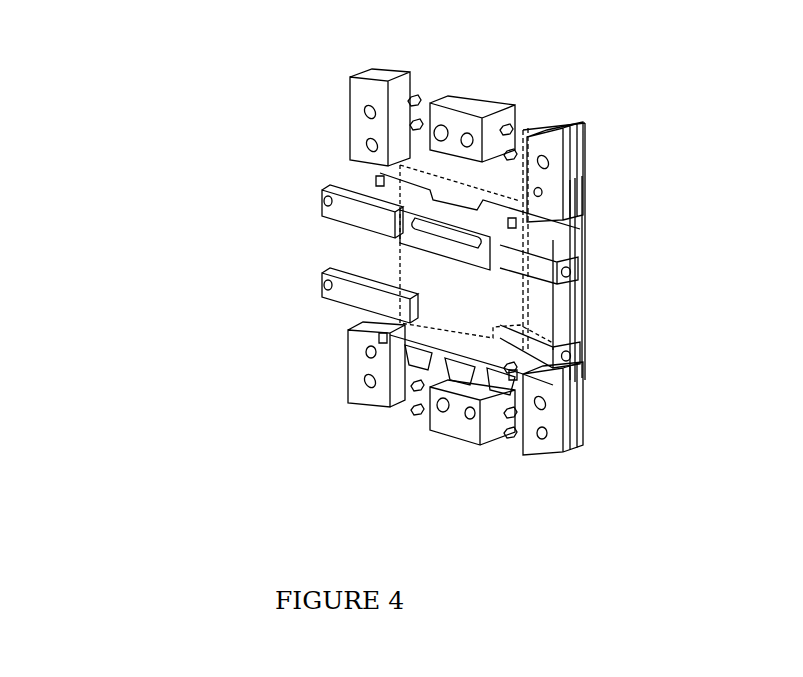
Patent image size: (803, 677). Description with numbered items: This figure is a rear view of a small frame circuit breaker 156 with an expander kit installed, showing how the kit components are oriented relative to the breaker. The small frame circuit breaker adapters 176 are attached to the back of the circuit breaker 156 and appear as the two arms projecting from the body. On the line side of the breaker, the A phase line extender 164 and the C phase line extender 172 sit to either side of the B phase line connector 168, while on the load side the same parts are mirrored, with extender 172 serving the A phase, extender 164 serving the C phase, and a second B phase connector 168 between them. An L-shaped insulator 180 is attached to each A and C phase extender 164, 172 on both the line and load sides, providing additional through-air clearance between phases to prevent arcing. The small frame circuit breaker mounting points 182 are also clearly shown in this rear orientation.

The small frame circuit breaker 156 is at (403, 267).
The small frame circuit breaker adapter 176 is at (343, 202).
The C phase line extender 172 is at (370, 97).
The A phase line extender 164 is at (551, 150).
The B phase line connector 168 is at (472, 102).
The L-shaped insulator 180 is at (427, 110).
The small frame circuit breaker mounting point 182 is at (380, 177).